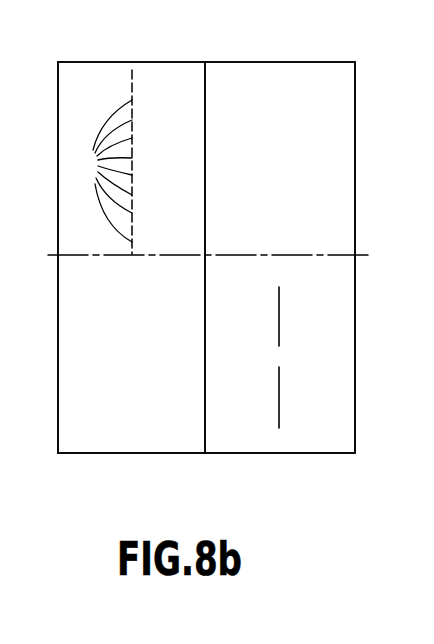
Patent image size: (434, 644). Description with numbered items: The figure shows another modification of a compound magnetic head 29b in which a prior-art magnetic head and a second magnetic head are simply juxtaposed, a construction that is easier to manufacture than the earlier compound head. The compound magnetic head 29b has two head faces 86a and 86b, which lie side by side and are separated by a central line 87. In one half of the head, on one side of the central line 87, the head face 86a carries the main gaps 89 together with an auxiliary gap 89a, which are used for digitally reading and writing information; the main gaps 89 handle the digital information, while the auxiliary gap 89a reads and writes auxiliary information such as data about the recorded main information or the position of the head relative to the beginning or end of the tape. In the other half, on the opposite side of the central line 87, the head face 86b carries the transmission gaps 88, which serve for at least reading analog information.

The compound magnetic head 29b is at (92, 57).
The head face 86a is at (112, 446).
The head face 86b is at (253, 446).
The central line 87 is at (366, 253).
The transmission gaps 88 is at (279, 318).
The main gaps 89 is at (104, 171).
The auxiliary gap 89a is at (134, 78).